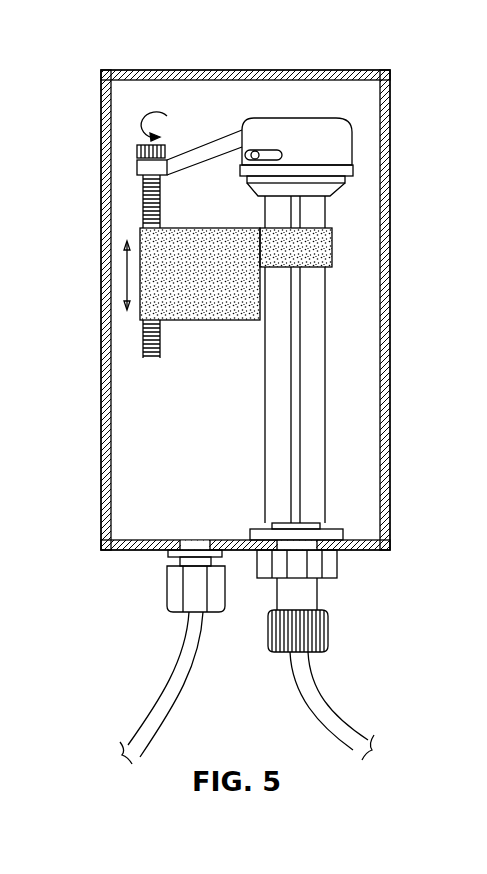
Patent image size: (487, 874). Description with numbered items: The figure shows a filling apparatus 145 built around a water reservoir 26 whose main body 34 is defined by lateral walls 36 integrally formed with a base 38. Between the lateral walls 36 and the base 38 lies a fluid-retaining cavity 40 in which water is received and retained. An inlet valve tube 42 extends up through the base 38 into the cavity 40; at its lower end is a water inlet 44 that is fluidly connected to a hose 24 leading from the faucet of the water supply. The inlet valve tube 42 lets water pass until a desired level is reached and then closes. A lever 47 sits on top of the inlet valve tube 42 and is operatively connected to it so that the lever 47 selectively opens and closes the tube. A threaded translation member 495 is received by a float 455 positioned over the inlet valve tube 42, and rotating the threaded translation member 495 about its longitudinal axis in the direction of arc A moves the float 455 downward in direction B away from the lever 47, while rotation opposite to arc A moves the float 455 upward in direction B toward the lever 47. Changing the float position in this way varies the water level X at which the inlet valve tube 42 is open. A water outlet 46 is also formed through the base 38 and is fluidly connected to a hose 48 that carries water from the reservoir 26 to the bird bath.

The filling apparatus 145 is at (88, 45).
The main body 34 is at (390, 70).
The water reservoir 26 is at (390, 200).
The lateral walls 36 is at (103, 378).
The base 38 is at (380, 550).
The fluid-retaining cavity 40 is at (305, 90).
The inlet valve tube 42 is at (272, 153).
The lever 47 is at (203, 145).
The threaded translation member 495 is at (140, 195).
The float 455 is at (213, 305).
The water outlet 46 is at (190, 545).
The water inlet 44 is at (305, 545).
The hose 48 is at (148, 722).
The hose 24 is at (342, 722).
The arc A is at (152, 112).
The direction B is at (125, 277).
The water level X is at (95, 255).